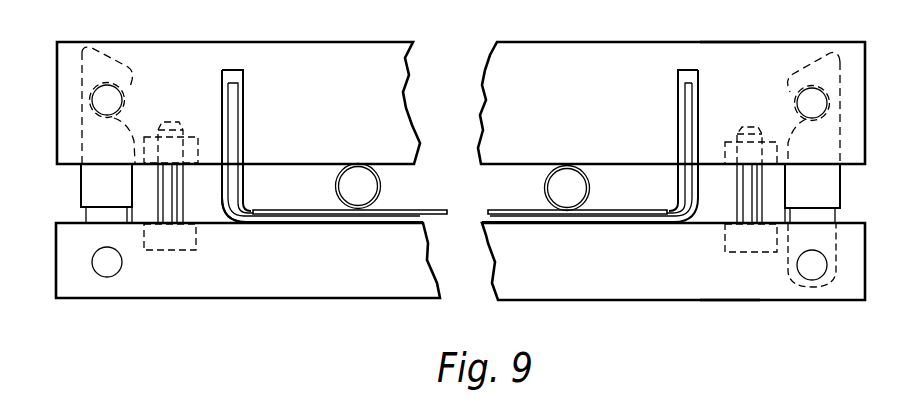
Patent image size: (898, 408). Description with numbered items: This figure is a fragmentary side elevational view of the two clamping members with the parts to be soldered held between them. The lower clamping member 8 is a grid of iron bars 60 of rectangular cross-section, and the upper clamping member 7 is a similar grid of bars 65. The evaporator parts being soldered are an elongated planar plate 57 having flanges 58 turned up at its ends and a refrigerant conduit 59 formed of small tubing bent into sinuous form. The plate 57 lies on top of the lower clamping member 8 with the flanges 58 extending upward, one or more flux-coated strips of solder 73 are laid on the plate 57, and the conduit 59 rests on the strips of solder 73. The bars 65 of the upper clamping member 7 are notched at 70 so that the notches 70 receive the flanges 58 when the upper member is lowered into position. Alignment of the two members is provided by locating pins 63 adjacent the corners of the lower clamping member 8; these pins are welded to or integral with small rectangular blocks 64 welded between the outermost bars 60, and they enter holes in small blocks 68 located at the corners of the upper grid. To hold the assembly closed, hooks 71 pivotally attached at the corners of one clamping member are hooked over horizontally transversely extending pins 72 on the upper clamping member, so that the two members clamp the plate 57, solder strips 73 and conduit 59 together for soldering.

The upper clamping member 7 is at (583, 43).
The lower clamping member 8 is at (645, 300).
The elongated plate 57 is at (424, 216).
The flanges 58 is at (233, 181).
The refrigerant conduit 59 is at (382, 185).
The iron bars 60 is at (713, 296).
The locating pins 63 is at (173, 191).
The rectangular blocks 64 is at (197, 241).
The bars 65 is at (676, 60).
The blocks 68 is at (148, 151).
The notches 70 is at (244, 73).
The hooks 71 is at (102, 178).
The pins 72 is at (123, 100).
The strips of solder 73 is at (613, 212).